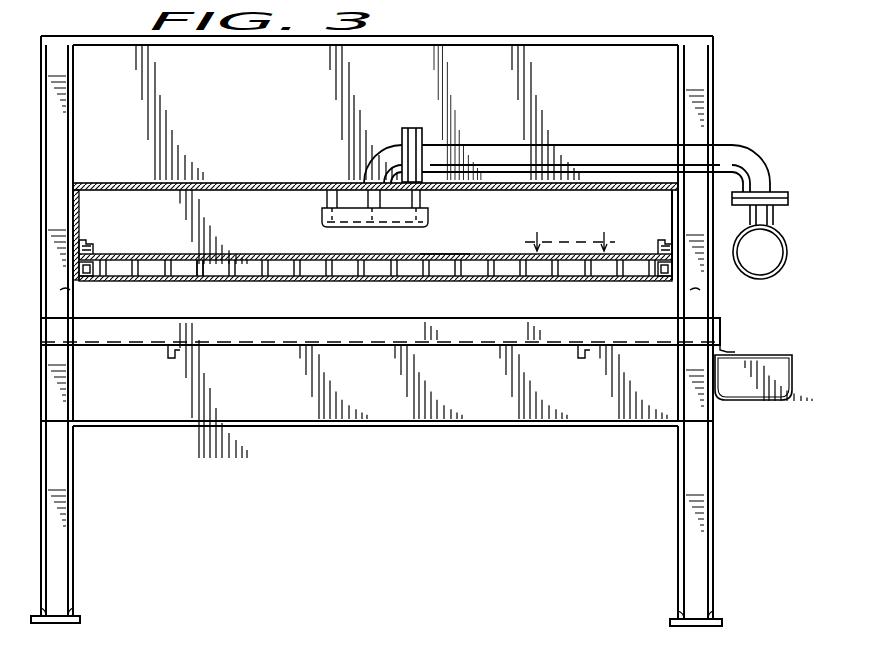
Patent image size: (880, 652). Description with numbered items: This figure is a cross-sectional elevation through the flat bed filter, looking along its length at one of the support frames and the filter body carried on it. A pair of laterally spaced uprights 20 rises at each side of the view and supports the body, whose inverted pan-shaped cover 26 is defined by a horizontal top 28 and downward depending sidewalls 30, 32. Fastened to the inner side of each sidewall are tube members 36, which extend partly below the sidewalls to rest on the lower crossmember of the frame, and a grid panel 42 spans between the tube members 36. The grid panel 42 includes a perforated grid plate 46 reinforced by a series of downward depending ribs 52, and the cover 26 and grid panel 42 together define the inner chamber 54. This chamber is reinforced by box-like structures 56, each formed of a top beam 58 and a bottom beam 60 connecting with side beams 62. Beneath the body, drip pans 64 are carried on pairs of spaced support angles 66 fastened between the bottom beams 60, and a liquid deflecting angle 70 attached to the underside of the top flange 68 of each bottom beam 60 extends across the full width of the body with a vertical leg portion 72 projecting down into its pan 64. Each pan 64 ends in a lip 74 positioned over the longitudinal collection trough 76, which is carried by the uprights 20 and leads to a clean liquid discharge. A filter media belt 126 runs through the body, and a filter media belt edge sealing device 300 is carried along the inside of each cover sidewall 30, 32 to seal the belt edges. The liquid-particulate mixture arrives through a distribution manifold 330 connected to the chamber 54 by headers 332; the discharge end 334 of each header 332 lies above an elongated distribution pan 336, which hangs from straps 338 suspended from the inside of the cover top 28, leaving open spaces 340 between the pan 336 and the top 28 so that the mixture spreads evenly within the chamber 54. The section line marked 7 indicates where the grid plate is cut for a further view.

The uprights 20 is at (702, 492).
The cover 26 is at (140, 183).
The top 28 is at (244, 183).
The sidewall 30 is at (78, 210).
The sidewall 32 is at (684, 208).
The tube members 36 is at (93, 278).
The grid panel 42 is at (270, 270).
The grid plate 46 is at (178, 254).
The ribs 52 is at (205, 270).
The inner chamber 54 is at (280, 240).
The box-like structures 56 is at (445, 46).
The top beam 58 is at (400, 92).
The bottom beam 60 is at (362, 399).
The side beams 62 is at (66, 290).
The drip pans 64 is at (246, 328).
The support angles 66 is at (170, 352).
The top flange 68 is at (460, 282).
The liquid deflecting angle 70 is at (428, 300).
The vertical leg portion 72 is at (535, 303).
The lip 74 is at (727, 348).
The collection trough 76 is at (793, 378).
The filter media belt 126 is at (438, 254).
The filter media belt edge sealing device 300 is at (86, 242).
The distribution manifold 330 is at (782, 272).
The headers 332 is at (556, 160).
The discharge end 334 is at (392, 160).
The distribution pan 336 is at (428, 222).
The straps 338 is at (327, 197).
The open spaces 340 is at (355, 200).
The section line 7- 7 is at (571, 234).